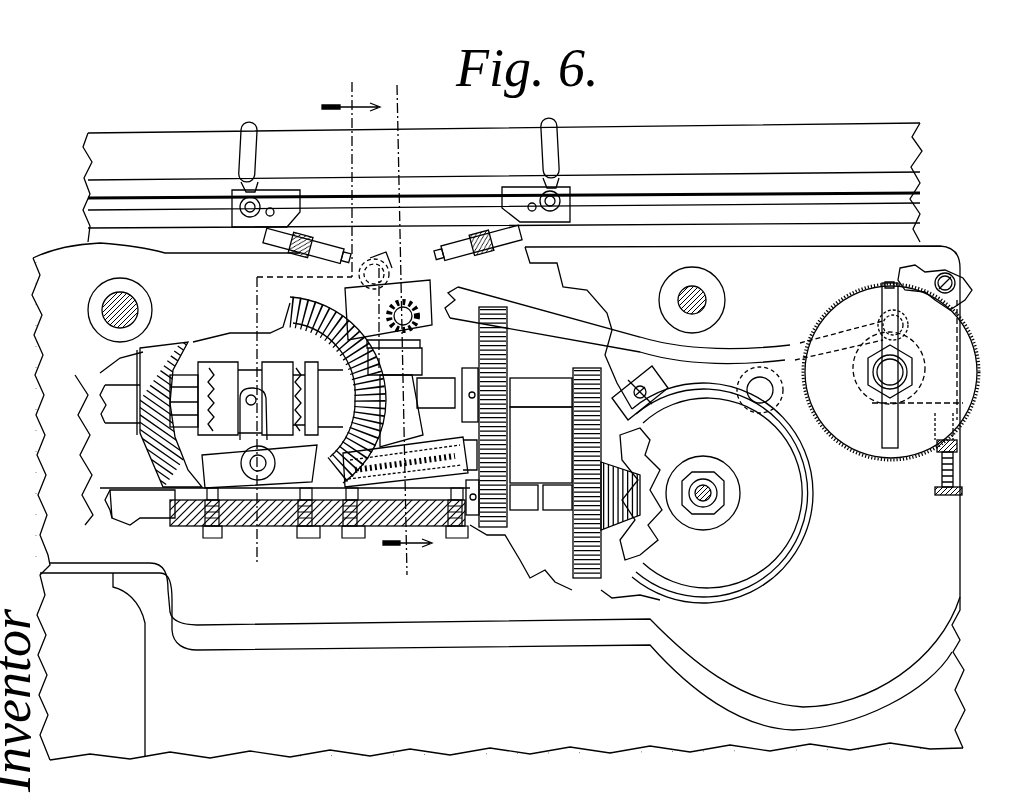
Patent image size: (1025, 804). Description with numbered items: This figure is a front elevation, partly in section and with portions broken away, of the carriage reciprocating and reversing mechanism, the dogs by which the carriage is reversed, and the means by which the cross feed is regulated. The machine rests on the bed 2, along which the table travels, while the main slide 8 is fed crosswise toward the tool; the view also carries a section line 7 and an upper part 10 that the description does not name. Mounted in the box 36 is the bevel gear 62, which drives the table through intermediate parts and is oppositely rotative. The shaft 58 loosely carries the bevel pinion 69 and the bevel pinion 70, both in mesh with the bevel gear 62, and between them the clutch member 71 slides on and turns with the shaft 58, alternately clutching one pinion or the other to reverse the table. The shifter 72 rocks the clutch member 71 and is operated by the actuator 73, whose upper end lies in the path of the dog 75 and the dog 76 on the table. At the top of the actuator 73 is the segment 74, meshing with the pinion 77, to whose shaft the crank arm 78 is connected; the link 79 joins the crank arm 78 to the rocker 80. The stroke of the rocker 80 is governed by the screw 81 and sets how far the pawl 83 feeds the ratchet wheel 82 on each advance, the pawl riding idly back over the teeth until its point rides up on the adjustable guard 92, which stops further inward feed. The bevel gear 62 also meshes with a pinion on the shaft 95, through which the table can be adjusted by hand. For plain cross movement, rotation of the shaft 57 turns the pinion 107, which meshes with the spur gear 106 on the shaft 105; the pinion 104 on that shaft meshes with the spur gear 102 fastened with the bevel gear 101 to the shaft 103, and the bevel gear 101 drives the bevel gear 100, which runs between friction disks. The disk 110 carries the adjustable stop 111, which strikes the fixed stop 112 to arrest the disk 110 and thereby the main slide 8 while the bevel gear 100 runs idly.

The bed 2 is at (408, 755).
The section line 7- 7 is at (405, 327).
The main slide 8 is at (315, 329).
The bed rail 10 is at (768, 133).
The box 36 is at (50, 452).
The shaft 57 is at (125, 518).
The shaft 58 is at (118, 420).
The bevel gear 62 is at (257, 285).
The bevel pinion 69 is at (148, 440).
The bevel pinion 70 is at (322, 380).
The clutch member 71 is at (288, 328).
The shifter 72 is at (238, 526).
The actuator 73 is at (408, 412).
The segment 74 is at (418, 335).
The dog 75 is at (282, 190).
The dog 76 is at (520, 190).
The pinion 77 is at (415, 300).
The crank arm 78 is at (388, 268).
The link 79 is at (510, 305).
The rocker 80 is at (935, 318).
The screw 81 is at (963, 462).
The ratchet wheel 82 is at (860, 440).
The pawl 83 is at (925, 266).
The adjustable guard 92 is at (862, 296).
The shaft 95 is at (128, 302).
The bevel gear 100 is at (625, 412).
The bevel gear 101 is at (618, 565).
The spur gear 102 is at (580, 530).
The shaft 103 is at (540, 545).
The pinion 104 is at (572, 370).
The shaft 105 is at (542, 407).
The spur gear 106 is at (508, 332).
The pinion 107 is at (478, 520).
The disk 110 is at (768, 545).
The stop 111 is at (645, 370).
The fixed stop 112 is at (775, 345).